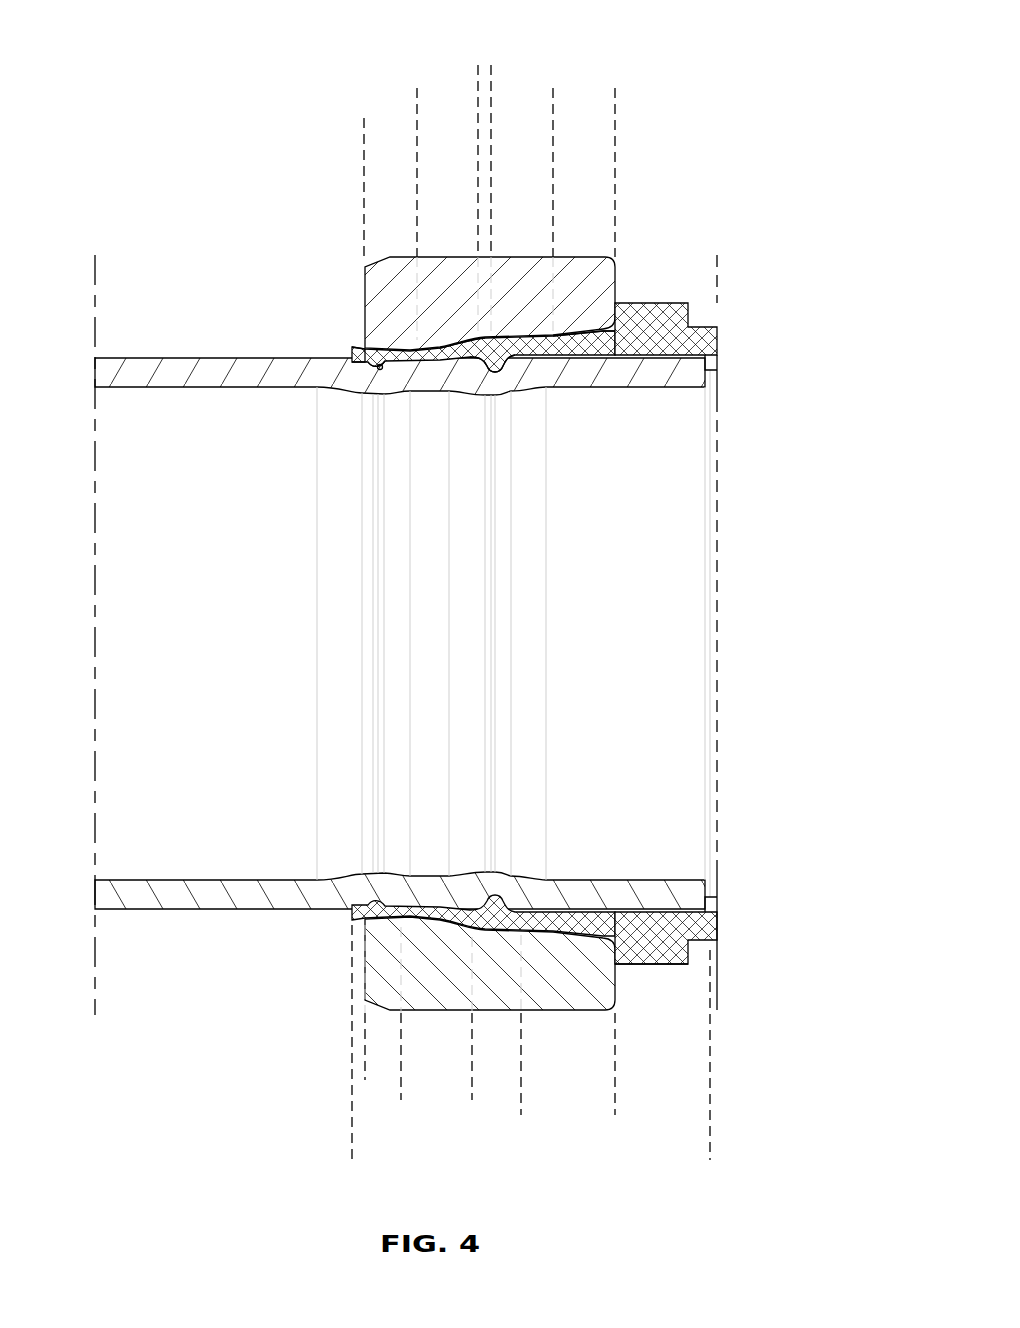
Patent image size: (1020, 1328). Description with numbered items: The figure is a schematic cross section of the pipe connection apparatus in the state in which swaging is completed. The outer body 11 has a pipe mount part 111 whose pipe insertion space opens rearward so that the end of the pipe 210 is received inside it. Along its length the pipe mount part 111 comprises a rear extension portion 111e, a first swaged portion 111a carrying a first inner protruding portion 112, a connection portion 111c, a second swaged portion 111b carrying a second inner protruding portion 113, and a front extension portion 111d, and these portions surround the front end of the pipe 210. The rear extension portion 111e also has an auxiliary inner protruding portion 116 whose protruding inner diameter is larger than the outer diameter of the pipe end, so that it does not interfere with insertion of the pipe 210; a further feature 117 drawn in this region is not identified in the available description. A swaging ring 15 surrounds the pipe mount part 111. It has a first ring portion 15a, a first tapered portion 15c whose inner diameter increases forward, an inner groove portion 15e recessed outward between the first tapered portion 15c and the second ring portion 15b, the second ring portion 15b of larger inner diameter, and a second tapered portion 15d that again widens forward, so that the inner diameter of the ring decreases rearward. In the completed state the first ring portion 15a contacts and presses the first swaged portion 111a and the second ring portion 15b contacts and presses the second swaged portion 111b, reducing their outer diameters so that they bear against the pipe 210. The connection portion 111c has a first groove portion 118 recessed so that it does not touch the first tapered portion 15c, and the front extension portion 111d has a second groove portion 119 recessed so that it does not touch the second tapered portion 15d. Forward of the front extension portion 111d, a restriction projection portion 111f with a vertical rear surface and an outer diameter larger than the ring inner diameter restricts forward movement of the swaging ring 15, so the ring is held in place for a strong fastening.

The outer body 11 is at (705, 342).
The swaging ring 15 is at (620, 42).
The first ring portion 15a is at (417, 125).
The second ring portion 15b is at (553, 128).
The first tapered portion 15c is at (417, 108).
The second tapered portion 15d is at (615, 95).
The inner groove portion 15e is at (504, 70).
The pipe mount part 111 is at (710, 1148).
The first swaged portion 111a is at (401, 1053).
The second swaged portion 111b is at (472, 1062).
The connection portion 111c is at (401, 1093).
The front extension portion 111d is at (521, 1105).
The rear extension portion 111e is at (382, 1072).
The restriction projection portion 111f is at (660, 965).
The first inner protruding portion 112 is at (378, 363).
The second inner protruding portion 113 is at (500, 372).
The auxiliary inner protruding portion 116 is at (358, 367).
The lip portion 117 is at (380, 367).
The first groove portion 118 is at (447, 349).
The second groove portion 119 is at (565, 336).
The pipe 210 is at (133, 895).